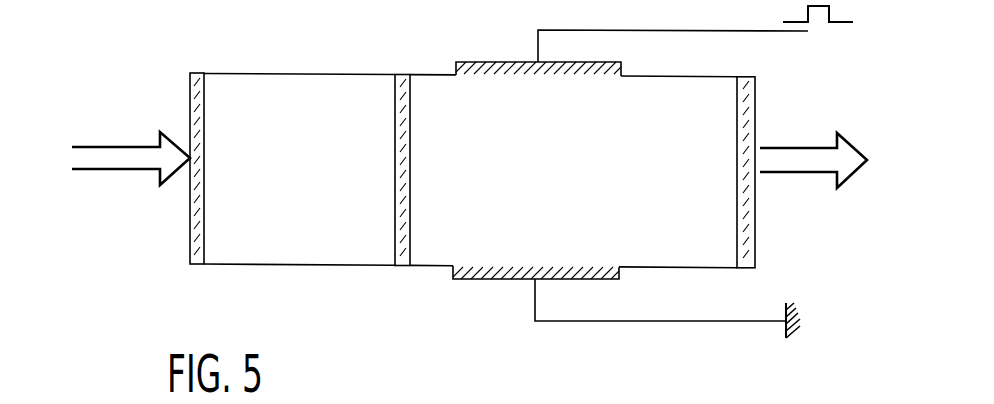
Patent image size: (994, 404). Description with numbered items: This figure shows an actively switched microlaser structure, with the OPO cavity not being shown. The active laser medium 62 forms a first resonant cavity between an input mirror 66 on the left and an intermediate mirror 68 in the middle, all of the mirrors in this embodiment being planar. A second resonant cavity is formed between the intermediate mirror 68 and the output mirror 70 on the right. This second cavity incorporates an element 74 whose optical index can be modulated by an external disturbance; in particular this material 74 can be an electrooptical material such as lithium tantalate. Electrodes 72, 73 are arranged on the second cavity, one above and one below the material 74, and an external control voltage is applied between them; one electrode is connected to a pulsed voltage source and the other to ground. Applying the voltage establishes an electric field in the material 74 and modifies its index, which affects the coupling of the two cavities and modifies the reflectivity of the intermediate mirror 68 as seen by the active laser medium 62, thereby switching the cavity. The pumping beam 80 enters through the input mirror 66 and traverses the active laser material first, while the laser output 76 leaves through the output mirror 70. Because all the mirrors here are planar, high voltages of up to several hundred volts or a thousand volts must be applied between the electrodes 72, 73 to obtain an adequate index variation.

The active laser medium 62 is at (285, 82).
The input mirror 66 is at (191, 88).
The intermediate mirror 68 is at (403, 84).
The output mirror 70 is at (755, 94).
The electrode 72 is at (503, 281).
The electrode 73 is at (500, 67).
The electrooptical material 74 is at (436, 263).
The outlet flow 76 is at (797, 170).
The pumping beam 80 is at (133, 167).